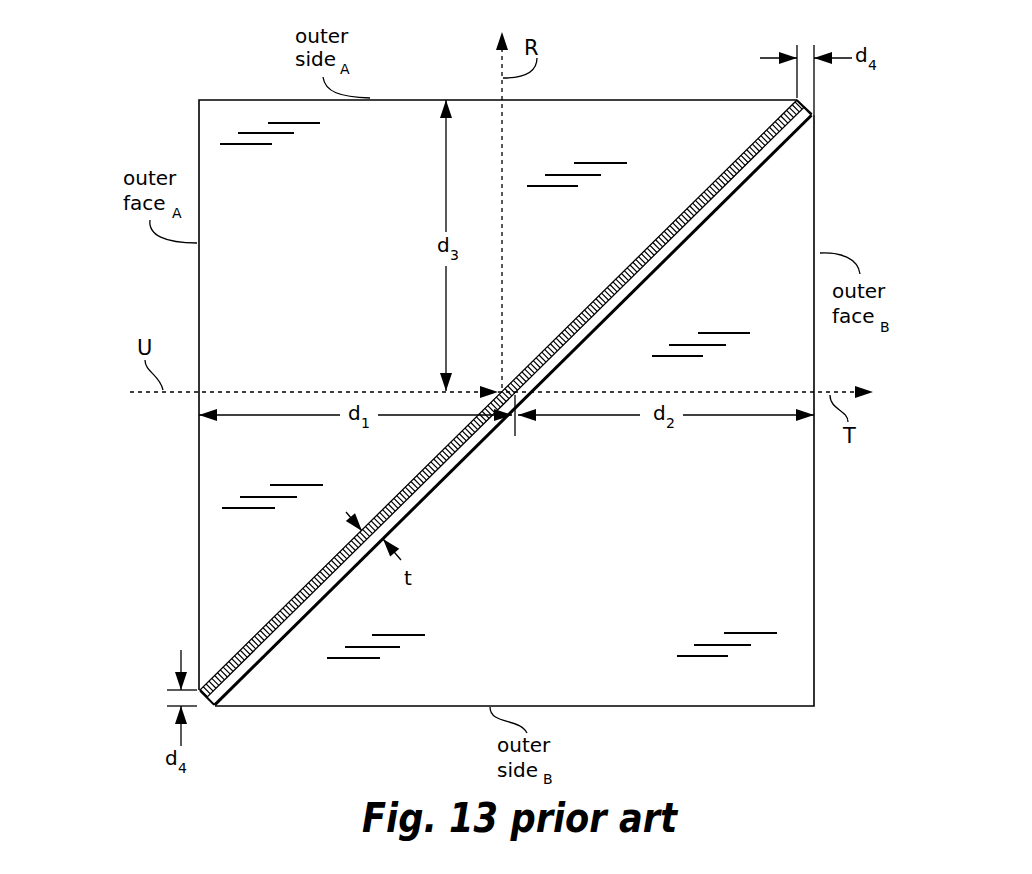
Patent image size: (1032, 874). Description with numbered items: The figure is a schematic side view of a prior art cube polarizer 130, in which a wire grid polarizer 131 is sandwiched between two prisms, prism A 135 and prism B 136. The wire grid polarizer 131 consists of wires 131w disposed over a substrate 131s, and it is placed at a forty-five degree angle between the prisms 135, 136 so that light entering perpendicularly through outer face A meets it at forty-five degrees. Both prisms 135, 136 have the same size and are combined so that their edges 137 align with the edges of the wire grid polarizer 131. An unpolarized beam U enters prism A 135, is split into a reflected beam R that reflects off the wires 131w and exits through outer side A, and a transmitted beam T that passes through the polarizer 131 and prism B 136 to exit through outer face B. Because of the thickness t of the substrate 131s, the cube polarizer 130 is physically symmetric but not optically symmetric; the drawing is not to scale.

The cube polarizer 130 is at (152, 62).
The wire grid polarizer 131 is at (638, 289).
The wires 131w is at (272, 618).
The substrate 131s is at (265, 658).
The prism A 135 is at (367, 304).
The prism B 136 is at (650, 574).
The edges 137 is at (792, 96).